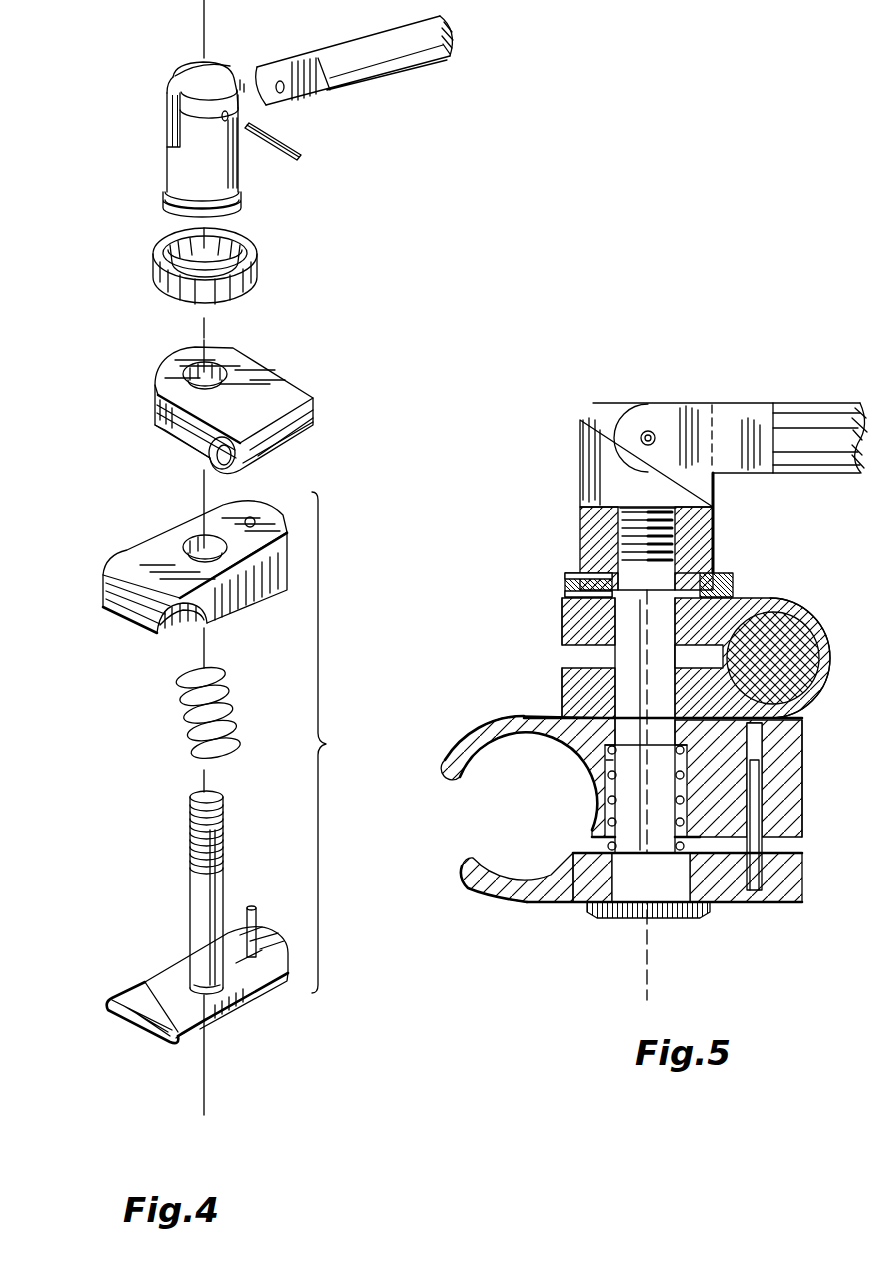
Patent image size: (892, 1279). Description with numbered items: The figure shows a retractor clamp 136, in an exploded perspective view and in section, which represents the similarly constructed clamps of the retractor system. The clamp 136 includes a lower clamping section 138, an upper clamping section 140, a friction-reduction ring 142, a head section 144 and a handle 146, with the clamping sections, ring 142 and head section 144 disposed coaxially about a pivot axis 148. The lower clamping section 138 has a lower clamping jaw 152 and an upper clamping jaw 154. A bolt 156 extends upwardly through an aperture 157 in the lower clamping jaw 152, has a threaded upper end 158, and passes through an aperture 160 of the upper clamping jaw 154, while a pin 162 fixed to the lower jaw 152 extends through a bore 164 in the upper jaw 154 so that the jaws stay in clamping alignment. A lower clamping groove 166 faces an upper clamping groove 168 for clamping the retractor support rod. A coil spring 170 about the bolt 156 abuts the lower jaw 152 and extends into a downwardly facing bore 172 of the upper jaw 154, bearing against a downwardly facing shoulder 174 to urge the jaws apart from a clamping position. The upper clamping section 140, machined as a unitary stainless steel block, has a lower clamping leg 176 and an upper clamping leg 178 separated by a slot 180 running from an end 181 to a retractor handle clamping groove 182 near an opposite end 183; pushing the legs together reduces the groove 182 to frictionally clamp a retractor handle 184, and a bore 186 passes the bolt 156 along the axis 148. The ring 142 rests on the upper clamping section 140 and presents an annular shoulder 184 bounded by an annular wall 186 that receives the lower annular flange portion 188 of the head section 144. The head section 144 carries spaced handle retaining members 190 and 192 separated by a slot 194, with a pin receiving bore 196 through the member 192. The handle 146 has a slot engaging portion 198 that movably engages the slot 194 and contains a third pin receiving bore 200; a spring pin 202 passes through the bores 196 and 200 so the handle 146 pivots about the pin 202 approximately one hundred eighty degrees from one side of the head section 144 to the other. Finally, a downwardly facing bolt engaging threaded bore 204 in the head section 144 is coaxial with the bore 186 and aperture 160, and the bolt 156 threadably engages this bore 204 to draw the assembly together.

In FIG. 4, the clamp 136 is at (340, 350).
In FIG. 5, the clamp 136 is at (738, 402).
In FIG. 4, the lower clamping section 138 is at (336, 742).
In FIG. 5, the lower clamping section 138 is at (806, 800).
In FIG. 4, the upper clamping section 140 is at (316, 415).
In FIG. 5, the upper clamping section 140 is at (766, 596).
In FIG. 4, the friction-reduction ring 142 is at (153, 273).
In FIG. 5, the friction-reduction ring 142 is at (618, 583).
In FIG. 4, the head section 144 is at (172, 170).
In FIG. 5, the head section 144 is at (593, 460).
In FIG. 4, the handle 146 is at (385, 72).
In FIG. 5, the handle 146 is at (772, 406).
In FIG. 4, the axis 148 is at (204, 485).
In FIG. 5, the axis 148 is at (648, 967).
In FIG. 4, the lower clamping jaw 152 is at (252, 1005).
In FIG. 5, the lower clamping jaw 152 is at (622, 895).
In FIG. 4, the upper clamping jaw 154 is at (248, 590).
In FIG. 5, the upper clamping jaw 154 is at (590, 762).
In FIG. 4, the bolt 156 is at (238, 871).
In FIG. 5, the bolt 156 is at (676, 725).
In FIG. 4, the aperture 157 is at (210, 988).
In FIG. 5, the aperture 157 is at (607, 892).
In FIG. 4, the threaded upper end 158 is at (225, 816).
In FIG. 5, the threaded upper end 158 is at (674, 513).
In FIG. 4, the aperture 160 is at (195, 538).
In FIG. 5, the aperture 160 is at (618, 730).
In FIG. 4, the pin 162 is at (258, 918).
In FIG. 5, the pin 162 is at (760, 827).
In FIG. 4, the bore 164 is at (254, 518).
In FIG. 4, the lower clamping groove 166 is at (143, 1000).
In FIG. 5, the lower clamping groove 166 is at (497, 863).
In FIG. 4, the upper clamping groove 168 is at (180, 630).
In FIG. 5, the upper clamping groove 168 is at (523, 745).
In FIG. 4, the coil spring 170 is at (232, 726).
In FIG. 5, the coil spring 170 is at (617, 808).
In FIG. 5, the downwardly facing bore 172 is at (616, 768).
In FIG. 5, the downwardly facing shoulder 174 is at (620, 740).
In FIG. 4, the lower clamping leg 176 is at (155, 425).
In FIG. 5, the lower clamping leg 176 is at (563, 690).
In FIG. 4, the upper clamping leg 178 is at (155, 380).
In FIG. 5, the upper clamping leg 178 is at (562, 607).
In FIG. 4, the slot 180 is at (155, 407).
In FIG. 5, the slot 180 is at (573, 655).
In FIG. 4, the end 181 is at (217, 343).
In FIG. 4, the retractor handle clamping groove 182 is at (235, 452).
In FIG. 5, the retractor handle clamping groove 182 is at (823, 660).
In FIG. 4, the opposite end 183 is at (290, 440).
In FIG. 4, the retractor handle 184 is at (240, 239).
In FIG. 5, the retractor handle 184 is at (603, 573).
In FIG. 4, the bore 186 is at (185, 240).
In FIG. 5, the bore 186 is at (583, 580).
In FIG. 4, the lower annular flange portion 188 is at (240, 207).
In FIG. 5, the lower annular flange portion 188 is at (714, 560).
In FIG. 4, the handle retaining member 190 is at (190, 65).
In FIG. 4, the handle retaining member 192 is at (240, 98).
In FIG. 5, the handle retaining member 192 is at (605, 403).
In FIG. 4, the slot 194 is at (218, 68).
In FIG. 4, the pin receiving bore 196 is at (223, 121).
In FIG. 4, the slot engaging portion 198 is at (307, 70).
In FIG. 5, the slot engaging portion 198 is at (697, 437).
In FIG. 4, the third pin receiving bore 200 is at (283, 82).
In FIG. 5, the third pin receiving bore 200 is at (652, 432).
In FIG. 4, the spring pin 202 is at (302, 163).
In FIG. 5, the spring pin 202 is at (658, 438).
In FIG. 5, the bolt engaging threaded bore 204 is at (663, 510).